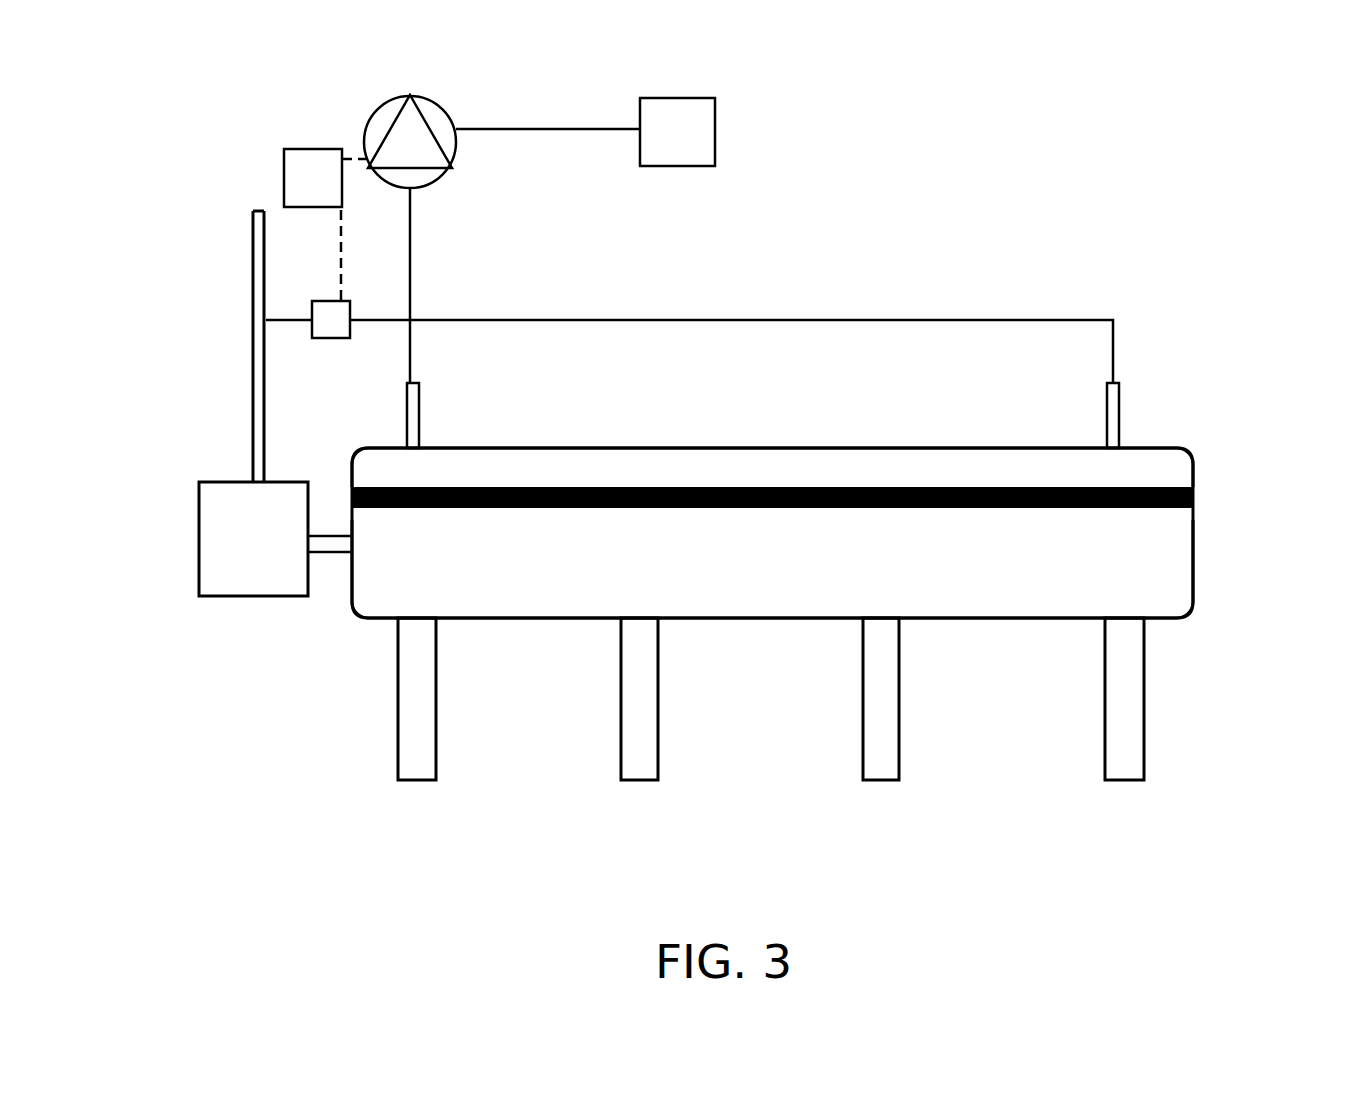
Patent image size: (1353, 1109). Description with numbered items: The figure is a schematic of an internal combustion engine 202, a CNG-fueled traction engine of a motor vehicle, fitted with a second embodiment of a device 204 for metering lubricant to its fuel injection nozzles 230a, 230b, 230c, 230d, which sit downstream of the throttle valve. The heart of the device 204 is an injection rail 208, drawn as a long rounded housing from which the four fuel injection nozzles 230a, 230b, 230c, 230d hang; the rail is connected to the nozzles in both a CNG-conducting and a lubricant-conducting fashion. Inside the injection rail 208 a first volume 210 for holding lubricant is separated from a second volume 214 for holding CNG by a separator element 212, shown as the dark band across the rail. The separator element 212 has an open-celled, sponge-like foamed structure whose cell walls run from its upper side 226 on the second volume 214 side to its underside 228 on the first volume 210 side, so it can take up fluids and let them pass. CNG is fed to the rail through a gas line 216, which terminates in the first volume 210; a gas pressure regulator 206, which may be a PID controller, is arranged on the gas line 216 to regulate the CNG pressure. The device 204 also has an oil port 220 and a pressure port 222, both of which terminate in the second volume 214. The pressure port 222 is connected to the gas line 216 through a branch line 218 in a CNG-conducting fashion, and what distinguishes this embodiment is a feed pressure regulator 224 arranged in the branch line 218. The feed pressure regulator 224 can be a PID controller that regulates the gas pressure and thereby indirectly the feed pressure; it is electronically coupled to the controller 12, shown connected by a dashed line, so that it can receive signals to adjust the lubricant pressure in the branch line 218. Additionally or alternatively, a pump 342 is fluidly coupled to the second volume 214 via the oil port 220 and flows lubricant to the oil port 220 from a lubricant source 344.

The controller 12 is at (325, 224).
The internal combustion engine 202 is at (163, 152).
The device for metering lubricant 204 is at (1208, 262).
The gas pressure regulator 206 is at (199, 540).
The injection rail 208 is at (1205, 437).
The first volume 210 is at (1195, 560).
The separator element 212 is at (1195, 497).
The second volume 214 is at (930, 448).
The gas line 216 is at (250, 345).
The branch line 218 is at (562, 318).
The oil port 220 is at (420, 420).
The pressure port 222 is at (1122, 398).
The feed pressure regulator 224 is at (330, 301).
The upper side of the separator element 226 is at (796, 482).
The underside of the separator element 228 is at (796, 511).
The fuel injection nozzle 230a is at (418, 782).
The fuel injection nozzle 230b is at (640, 782).
The fuel injection nozzle 230c is at (880, 782).
The fuel injection nozzle 230d is at (1124, 782).
The pump 342 is at (380, 117).
The lubricant source 344 is at (677, 132).